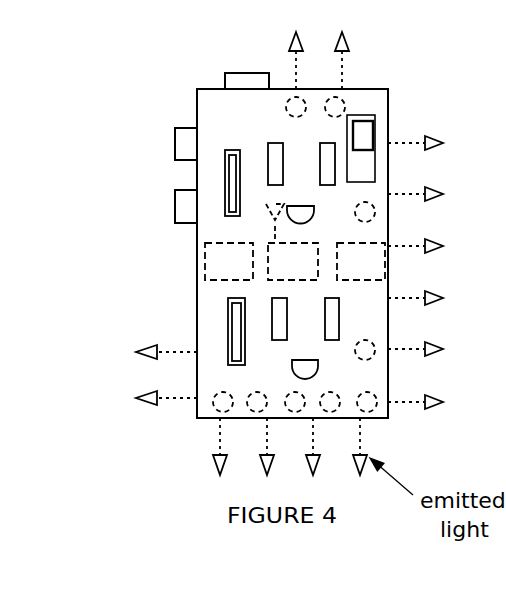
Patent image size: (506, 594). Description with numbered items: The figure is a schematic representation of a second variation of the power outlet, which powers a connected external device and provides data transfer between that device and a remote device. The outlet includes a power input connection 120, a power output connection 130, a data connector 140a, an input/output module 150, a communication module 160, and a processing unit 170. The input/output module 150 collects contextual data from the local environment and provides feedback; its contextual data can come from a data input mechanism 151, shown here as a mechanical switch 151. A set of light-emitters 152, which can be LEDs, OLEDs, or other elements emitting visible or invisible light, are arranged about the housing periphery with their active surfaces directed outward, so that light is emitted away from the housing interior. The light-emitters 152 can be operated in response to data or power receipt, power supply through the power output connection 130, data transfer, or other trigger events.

The power input connection 120 is at (216, 86).
The power output connection 130 is at (248, 304).
The data connector 140a is at (213, 337).
The input/output module 150 is at (248, 275).
The data input mechanism 151 is at (389, 113).
The light-emitters 152 is at (379, 374).
The communication module 160 is at (312, 275).
The processing unit 170 is at (380, 275).